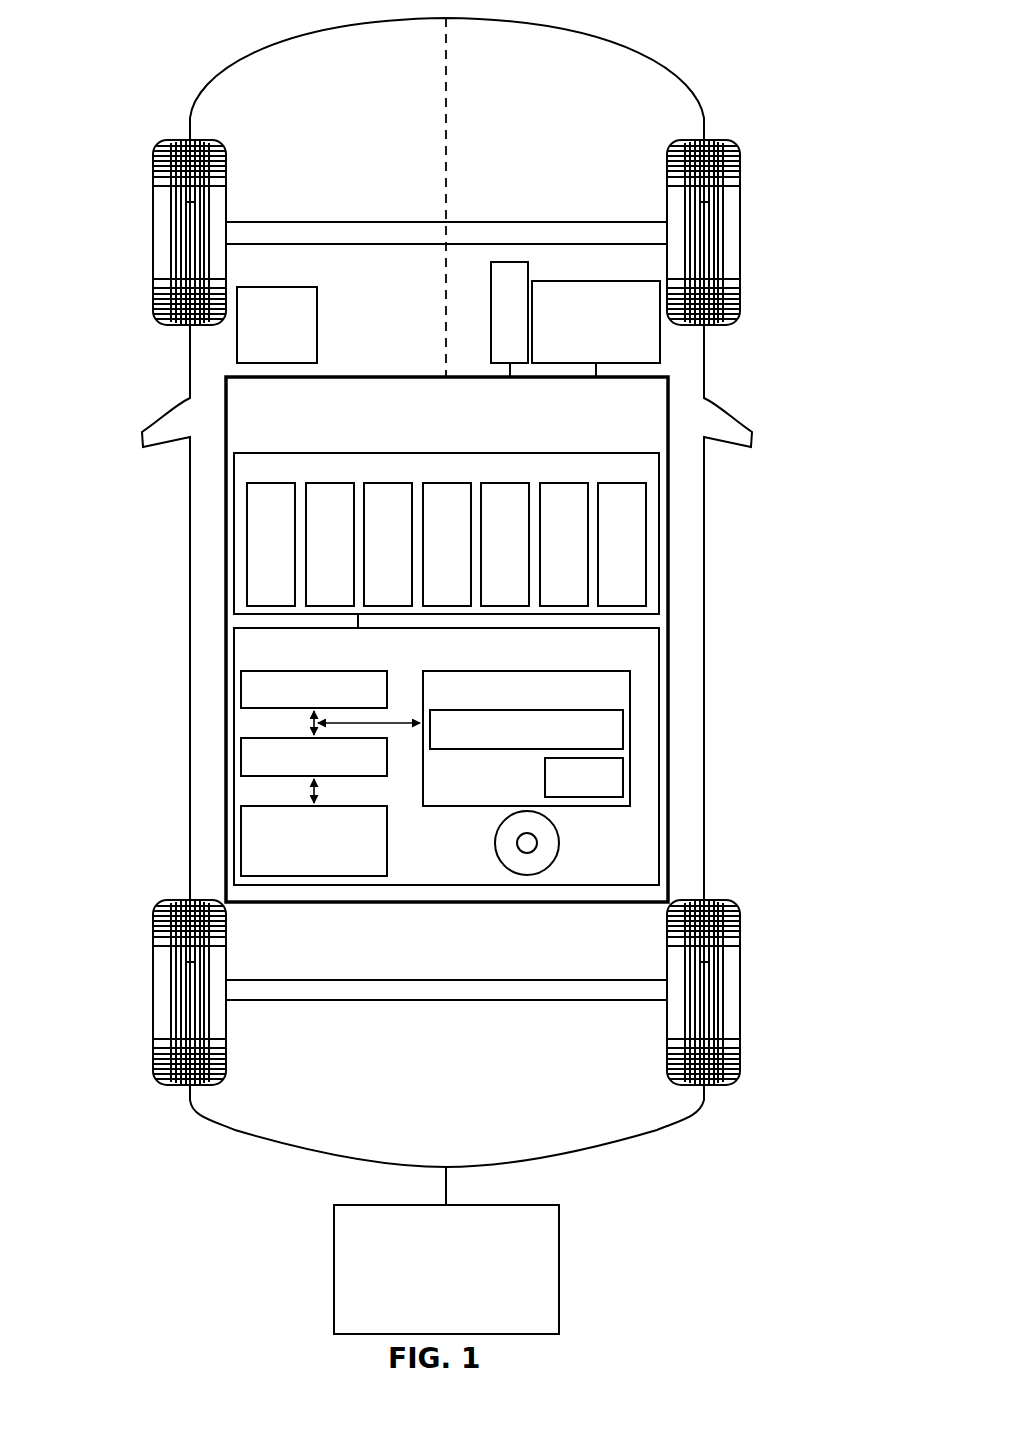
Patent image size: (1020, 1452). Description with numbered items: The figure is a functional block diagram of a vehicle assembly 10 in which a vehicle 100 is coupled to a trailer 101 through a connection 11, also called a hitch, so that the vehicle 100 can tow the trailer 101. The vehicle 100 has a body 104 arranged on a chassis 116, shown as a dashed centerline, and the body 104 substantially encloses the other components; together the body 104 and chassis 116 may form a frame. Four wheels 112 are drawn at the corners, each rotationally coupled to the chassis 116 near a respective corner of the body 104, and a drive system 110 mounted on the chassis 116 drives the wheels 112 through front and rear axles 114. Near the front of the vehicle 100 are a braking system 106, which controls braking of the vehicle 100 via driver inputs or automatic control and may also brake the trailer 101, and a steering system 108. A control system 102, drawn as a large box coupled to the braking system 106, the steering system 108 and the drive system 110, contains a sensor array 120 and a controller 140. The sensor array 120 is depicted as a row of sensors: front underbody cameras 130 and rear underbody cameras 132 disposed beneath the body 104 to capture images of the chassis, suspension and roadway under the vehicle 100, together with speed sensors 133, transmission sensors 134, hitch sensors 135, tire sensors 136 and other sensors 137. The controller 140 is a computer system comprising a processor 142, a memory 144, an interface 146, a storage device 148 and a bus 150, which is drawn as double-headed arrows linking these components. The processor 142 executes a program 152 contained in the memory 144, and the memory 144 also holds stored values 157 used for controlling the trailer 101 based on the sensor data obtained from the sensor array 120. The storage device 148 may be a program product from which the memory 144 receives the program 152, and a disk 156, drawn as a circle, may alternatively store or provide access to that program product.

The vehicle assembly 10 is at (118, 27).
The vehicle 100 is at (145, 85).
The connection 11 is at (440, 1172).
The trailer 101 is at (543, 1204).
The control system 102 is at (670, 402).
The body 104 is at (190, 456).
The braking system 106 is at (297, 286).
The steering system 108 is at (510, 260).
The drive system 110 is at (597, 280).
The wheels 112 is at (153, 233).
The axles 114 is at (308, 232).
The chassis 116 is at (450, 100).
The sensor array 120 is at (302, 452).
The front underbody cameras 130 is at (246, 548).
The rear underbody cameras 132 is at (306, 588).
The speed sensors 133 is at (364, 597).
The transmission sensors 134 is at (462, 482).
The hitch sensors 135 is at (518, 482).
The tire sensors 136 is at (577, 482).
The other sensors 137 is at (645, 582).
The controller 140 is at (233, 650).
The processor 142 is at (240, 692).
The memory 144 is at (632, 683).
The interface 146 is at (240, 757).
The storage device 148 is at (352, 877).
The bus 150 is at (310, 722).
The program 152 is at (625, 730).
The disk 156 is at (528, 876).
The stored values 157 is at (625, 775).